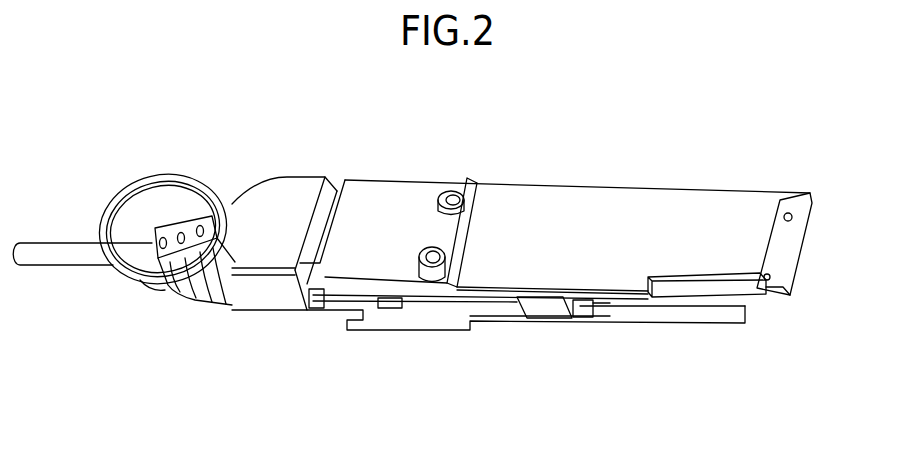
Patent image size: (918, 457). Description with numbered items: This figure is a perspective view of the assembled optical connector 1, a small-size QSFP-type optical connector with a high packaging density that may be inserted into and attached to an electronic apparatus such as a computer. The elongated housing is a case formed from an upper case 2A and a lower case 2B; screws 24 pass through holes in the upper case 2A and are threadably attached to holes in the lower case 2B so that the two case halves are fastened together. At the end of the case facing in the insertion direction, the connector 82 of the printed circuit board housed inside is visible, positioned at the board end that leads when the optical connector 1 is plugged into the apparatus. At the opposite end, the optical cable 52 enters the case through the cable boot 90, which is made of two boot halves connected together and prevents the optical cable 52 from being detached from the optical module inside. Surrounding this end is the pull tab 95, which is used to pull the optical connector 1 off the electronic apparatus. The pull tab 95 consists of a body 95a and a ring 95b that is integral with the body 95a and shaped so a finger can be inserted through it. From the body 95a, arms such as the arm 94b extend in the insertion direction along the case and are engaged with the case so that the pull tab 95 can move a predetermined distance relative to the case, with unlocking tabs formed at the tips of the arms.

The optical connector 1 is at (769, 107).
The upper case 2A is at (636, 193).
The lower case 2B is at (610, 330).
The screws 24 is at (432, 252).
The optical cable 52 is at (40, 255).
The connector 82 is at (783, 305).
The cable boot 90 is at (208, 285).
The arm 94b is at (420, 322).
The pull tab 95 is at (172, 178).
The body 95a is at (288, 192).
The ring 95b is at (152, 278).